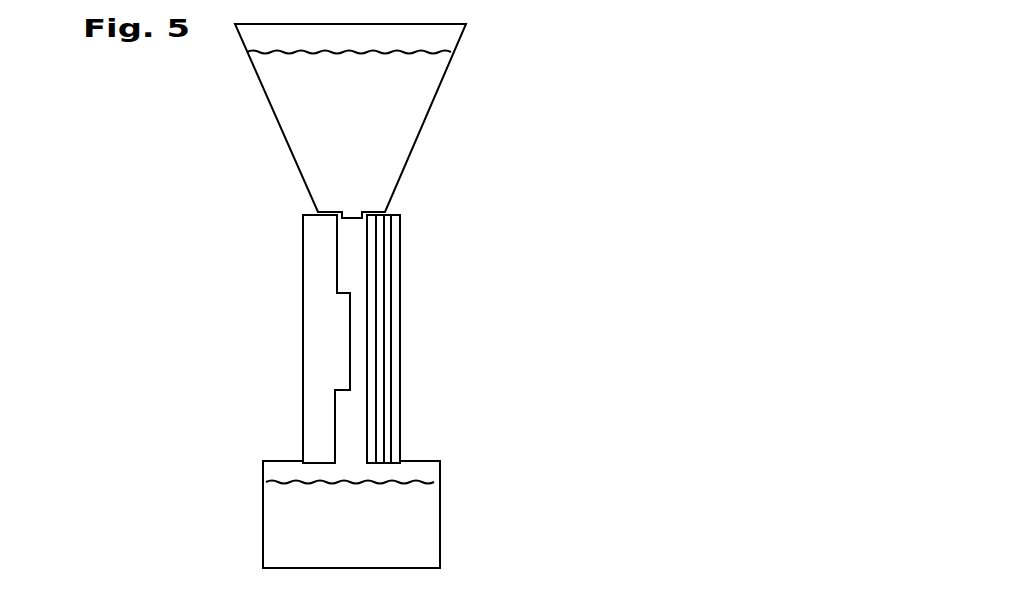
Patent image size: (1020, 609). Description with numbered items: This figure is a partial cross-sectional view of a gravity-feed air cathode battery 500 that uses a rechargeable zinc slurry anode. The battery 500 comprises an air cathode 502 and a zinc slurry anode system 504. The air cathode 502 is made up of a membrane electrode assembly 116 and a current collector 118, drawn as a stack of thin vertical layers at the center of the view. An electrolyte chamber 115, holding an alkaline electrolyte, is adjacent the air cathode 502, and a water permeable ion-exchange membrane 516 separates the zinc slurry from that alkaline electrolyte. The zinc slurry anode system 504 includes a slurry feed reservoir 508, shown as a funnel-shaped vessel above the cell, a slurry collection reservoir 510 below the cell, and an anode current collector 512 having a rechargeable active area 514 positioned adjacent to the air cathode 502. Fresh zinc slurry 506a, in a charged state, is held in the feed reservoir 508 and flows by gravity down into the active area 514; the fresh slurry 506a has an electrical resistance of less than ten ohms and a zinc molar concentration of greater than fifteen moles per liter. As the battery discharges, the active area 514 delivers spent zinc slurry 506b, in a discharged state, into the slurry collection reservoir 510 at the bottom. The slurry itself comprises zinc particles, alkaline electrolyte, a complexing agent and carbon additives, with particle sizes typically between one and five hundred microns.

The battery 500 is at (678, 140).
The zinc slurry anode system 504 is at (205, 364).
The fresh zinc slurry 506a is at (349, 104).
The spent zinc slurry 506b is at (350, 522).
The slurry feed reservoir 508 is at (418, 138).
The slurry collection reservoir 510 is at (441, 532).
The anode current collector 512 is at (303, 313).
The rechargeable active area 514 is at (350, 338).
The water permeable IEM 516 is at (372, 345).
The membrane electrode assembly 116 is at (623, 310).
The current collector 118 is at (399, 255).
The air cathode 502 is at (402, 290).
The electrolyte chamber 115 is at (382, 465).